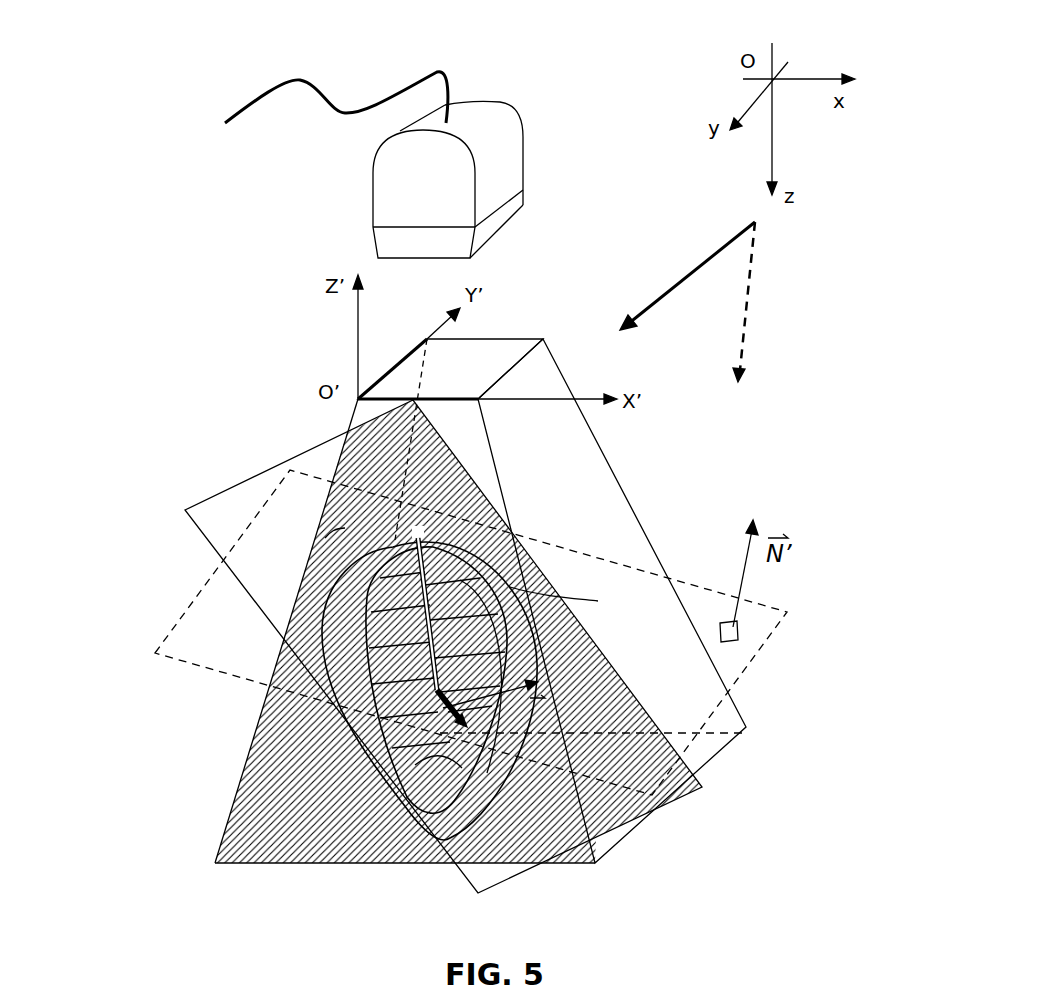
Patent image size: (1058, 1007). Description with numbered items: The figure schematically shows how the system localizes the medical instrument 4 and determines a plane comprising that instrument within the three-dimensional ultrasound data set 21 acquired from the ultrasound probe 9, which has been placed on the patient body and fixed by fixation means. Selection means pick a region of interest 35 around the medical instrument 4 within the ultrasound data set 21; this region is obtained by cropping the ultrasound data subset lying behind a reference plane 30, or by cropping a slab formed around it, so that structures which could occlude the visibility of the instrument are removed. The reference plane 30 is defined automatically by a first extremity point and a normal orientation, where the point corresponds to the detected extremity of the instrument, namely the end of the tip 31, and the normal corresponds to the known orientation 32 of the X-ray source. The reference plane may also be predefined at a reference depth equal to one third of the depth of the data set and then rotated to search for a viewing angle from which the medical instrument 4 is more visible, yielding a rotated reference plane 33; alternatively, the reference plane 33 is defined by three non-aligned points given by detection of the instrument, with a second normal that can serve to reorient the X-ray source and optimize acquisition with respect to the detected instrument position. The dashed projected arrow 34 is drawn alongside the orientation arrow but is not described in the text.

The medical instrument 4 is at (517, 862).
The ultrasound probe 9 is at (528, 132).
The 3D ultrasound data set 21 is at (547, 337).
The reference plane 30 is at (225, 498).
The tip 31 is at (471, 632).
The known orientation 32 is at (695, 268).
The rotated reference plane 33 is at (697, 597).
The projected direction vector 34 is at (745, 312).
The region of interest 35 is at (325, 803).